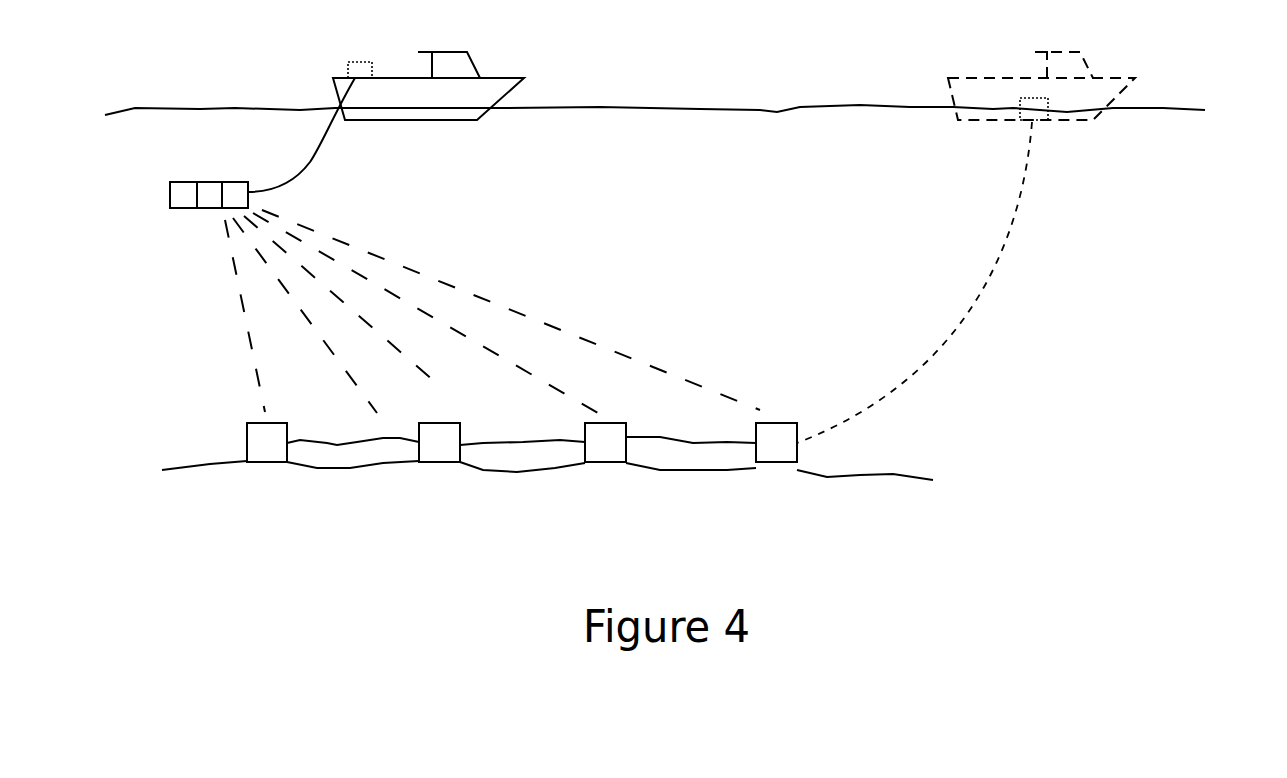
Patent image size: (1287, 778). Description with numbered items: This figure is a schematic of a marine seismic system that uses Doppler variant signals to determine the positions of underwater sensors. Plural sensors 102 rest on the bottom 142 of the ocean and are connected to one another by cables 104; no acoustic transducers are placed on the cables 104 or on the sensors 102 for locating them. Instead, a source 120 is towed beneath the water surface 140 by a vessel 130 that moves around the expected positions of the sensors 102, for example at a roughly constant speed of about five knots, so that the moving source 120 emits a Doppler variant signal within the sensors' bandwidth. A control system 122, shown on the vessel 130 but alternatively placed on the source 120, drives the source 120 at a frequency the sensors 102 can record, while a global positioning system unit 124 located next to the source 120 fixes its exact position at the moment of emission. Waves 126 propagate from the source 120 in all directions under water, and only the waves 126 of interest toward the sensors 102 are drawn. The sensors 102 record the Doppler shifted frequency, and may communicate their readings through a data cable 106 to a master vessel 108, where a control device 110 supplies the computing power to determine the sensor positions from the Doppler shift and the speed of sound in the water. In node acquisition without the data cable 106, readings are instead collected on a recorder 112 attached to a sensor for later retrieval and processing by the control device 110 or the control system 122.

The sensors 102 is at (267, 448).
The cables 104 is at (337, 443).
The data cables 106 is at (973, 317).
The master vessel 108 is at (988, 78).
The control device 110 is at (1050, 113).
The recorder 112 is at (788, 460).
The source 120 is at (180, 193).
The control system 122 is at (361, 62).
The global positioning system unit 124 is at (238, 190).
The waves 126 is at (208, 200).
The vessel 130 is at (502, 78).
The water surface 140 is at (1170, 108).
The bottom 142 is at (897, 473).